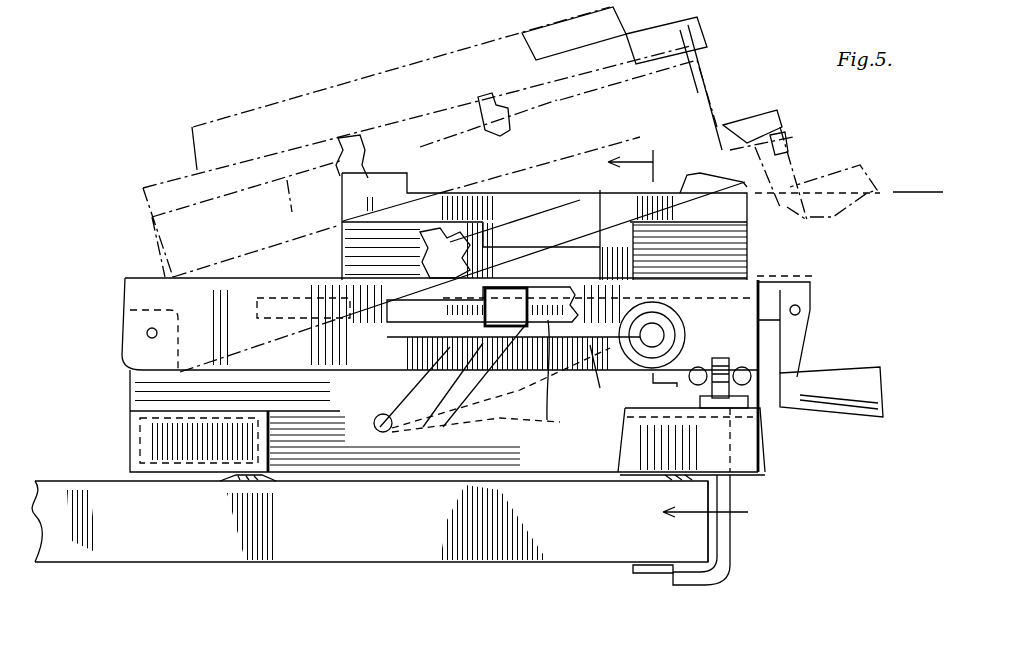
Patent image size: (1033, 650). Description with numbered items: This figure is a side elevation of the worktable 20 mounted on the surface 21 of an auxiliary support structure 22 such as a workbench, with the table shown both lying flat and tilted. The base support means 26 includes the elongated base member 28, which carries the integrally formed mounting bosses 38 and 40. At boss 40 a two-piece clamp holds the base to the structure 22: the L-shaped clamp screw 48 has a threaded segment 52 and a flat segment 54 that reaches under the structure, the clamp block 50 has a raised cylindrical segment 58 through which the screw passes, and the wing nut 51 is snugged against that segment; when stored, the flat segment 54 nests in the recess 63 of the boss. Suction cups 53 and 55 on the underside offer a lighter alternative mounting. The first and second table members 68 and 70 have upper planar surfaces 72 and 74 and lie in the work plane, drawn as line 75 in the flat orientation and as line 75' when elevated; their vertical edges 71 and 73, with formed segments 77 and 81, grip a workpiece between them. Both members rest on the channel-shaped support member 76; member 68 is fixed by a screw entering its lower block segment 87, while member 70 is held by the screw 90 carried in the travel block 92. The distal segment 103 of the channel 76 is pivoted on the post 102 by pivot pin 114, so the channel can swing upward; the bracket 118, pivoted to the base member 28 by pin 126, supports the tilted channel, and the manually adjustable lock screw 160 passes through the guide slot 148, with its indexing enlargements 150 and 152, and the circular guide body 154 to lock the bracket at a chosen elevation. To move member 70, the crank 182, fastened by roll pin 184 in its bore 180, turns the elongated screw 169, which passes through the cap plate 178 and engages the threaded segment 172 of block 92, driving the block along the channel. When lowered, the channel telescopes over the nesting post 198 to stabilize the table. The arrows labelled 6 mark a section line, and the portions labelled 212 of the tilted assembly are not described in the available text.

The section line 6- 6 is at (668, 341).
The worktable 20 is at (98, 219).
The surface 21 is at (67, 482).
The auxiliary support structure 22 is at (310, 543).
The base support means 26 is at (110, 395).
The first elongated base member 28 is at (548, 450).
The mounting boss 38 is at (138, 432).
The mounting boss 40 is at (763, 447).
The clamp screw member 48 is at (730, 567).
The clamp block 50 is at (612, 418).
The wing nut 51 is at (690, 383).
The threaded segment 52 is at (730, 488).
The suction cup 53 is at (643, 478).
The flat segment 54 is at (652, 574).
The suction cup 55 is at (237, 482).
The cylindrical segment 58 is at (750, 403).
The recess 63 is at (760, 462).
The first table member 68 is at (670, 200).
The second table member 70 is at (480, 193).
The vertical edge surface 71 is at (340, 133).
The upper planar surface 72 is at (320, 138).
The vertical edge surface 73 is at (483, 93).
The upper planar surface 74 is at (262, 153).
The work plane line 75 is at (849, 170).
The work plane line 75' is at (767, 45).
The table support member 76 is at (257, 280).
The formed segment 77 is at (507, 200).
The gripping segment 81 is at (483, 117).
The lower block segment 87 is at (745, 265).
The screw 90 is at (470, 252).
The travel block 92 is at (545, 324).
The post 102 is at (127, 310).
The distal segment 103 is at (123, 280).
The pivot pin 114 is at (150, 333).
The bracket 118 is at (545, 422).
The pivot pin 126 is at (375, 420).
The guide slot 148 is at (471, 353).
The indexing enlargement 150 is at (568, 370).
The indexing enlargement 152 is at (523, 397).
The circular guide body 154 is at (614, 374).
The lock screw 160 is at (683, 283).
The elongated screw 169 is at (590, 413).
The segment 172 is at (470, 418).
The cap plate 178 is at (762, 280).
The bore 180 is at (797, 287).
The hand operated crank 182 is at (810, 333).
The roll pin 184 is at (800, 310).
The nesting post 198 is at (742, 240).
The roller 212 is at (163, 163).